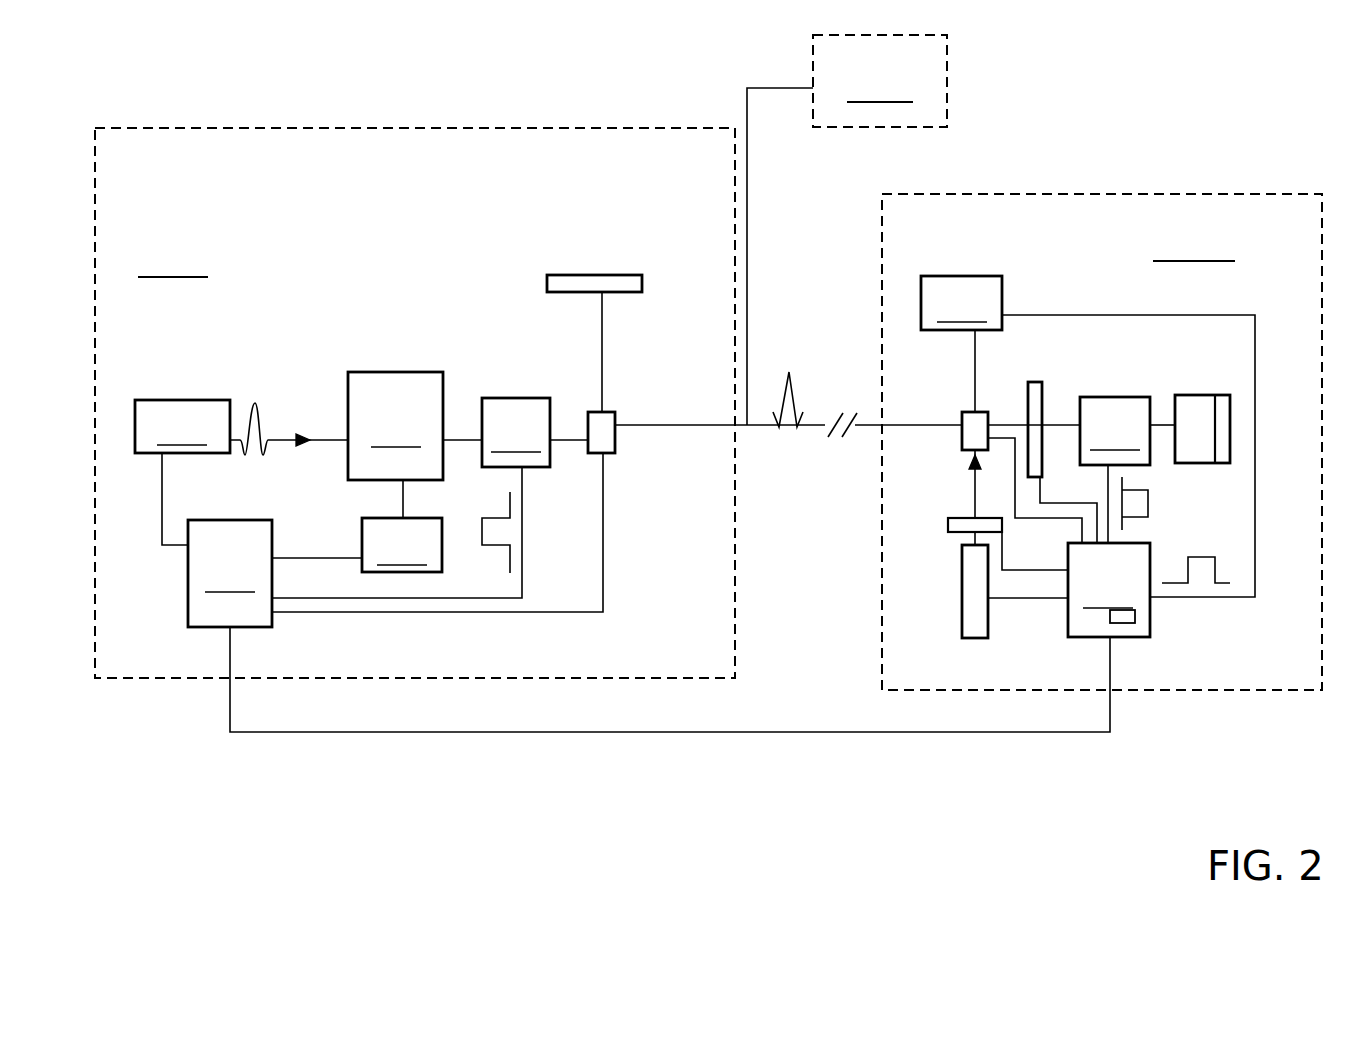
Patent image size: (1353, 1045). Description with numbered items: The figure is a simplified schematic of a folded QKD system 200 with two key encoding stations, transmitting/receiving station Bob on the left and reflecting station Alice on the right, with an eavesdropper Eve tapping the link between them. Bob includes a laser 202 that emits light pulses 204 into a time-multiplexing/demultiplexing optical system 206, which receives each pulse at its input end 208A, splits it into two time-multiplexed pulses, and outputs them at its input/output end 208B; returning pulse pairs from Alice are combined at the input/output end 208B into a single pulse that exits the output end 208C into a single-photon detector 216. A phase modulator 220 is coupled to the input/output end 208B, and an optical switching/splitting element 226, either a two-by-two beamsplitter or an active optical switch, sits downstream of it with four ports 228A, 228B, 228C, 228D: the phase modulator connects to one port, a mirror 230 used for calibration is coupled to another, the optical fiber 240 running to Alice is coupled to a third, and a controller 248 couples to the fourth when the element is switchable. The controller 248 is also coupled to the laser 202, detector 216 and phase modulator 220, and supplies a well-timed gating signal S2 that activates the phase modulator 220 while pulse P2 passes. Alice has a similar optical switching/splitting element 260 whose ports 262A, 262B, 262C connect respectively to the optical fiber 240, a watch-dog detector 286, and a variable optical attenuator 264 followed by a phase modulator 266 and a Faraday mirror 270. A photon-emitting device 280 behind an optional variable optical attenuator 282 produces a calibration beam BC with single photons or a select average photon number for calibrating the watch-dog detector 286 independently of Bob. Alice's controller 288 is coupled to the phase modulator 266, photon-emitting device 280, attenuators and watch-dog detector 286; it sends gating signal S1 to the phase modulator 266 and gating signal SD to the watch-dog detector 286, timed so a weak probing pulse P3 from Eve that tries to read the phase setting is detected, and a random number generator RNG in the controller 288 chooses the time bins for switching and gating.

The folded QKD system 200 is at (460, 71).
The laser 202 is at (182, 472).
The light pulses 204 is at (257, 405).
The time-multiplexing/demultiplexing optical system 206 is at (415, 445).
The input end 208A is at (347, 407).
The input/output end 208B is at (443, 383).
The output end 208C is at (375, 481).
The single-photon detector 216 is at (402, 545).
The phase modulator 220 is at (535, 432).
The optical switching/splitting element 226 is at (622, 405).
The port 228A is at (588, 424).
The port 228B is at (604, 411).
The port 228C is at (616, 450).
The port 228D is at (603, 454).
The mirror 230 is at (592, 275).
The optical fiber 240 is at (760, 427).
The controller 248 is at (649, 592).
The optical switching/splitting element 260 is at (952, 403).
The port 262A is at (960, 423).
The port 262B is at (977, 410).
The port 262C is at (990, 417).
The variable optical attenuator 264 is at (1027, 380).
The phase modulator 266 is at (1127, 470).
The Faraday mirror 270 is at (1175, 408).
The photon-emitting device 280 is at (977, 638).
The variable optical attenuator 282 is at (947, 522).
The watch-dog detector 286 is at (1088, 436).
The controller 288 is at (1109, 590).
The probe signal P3 is at (790, 383).
The gating signal S1 is at (1150, 503).
The gating signal S2 is at (508, 561).
The calibration beam BC is at (1040, 503).
The WDD gating signal SD is at (1232, 583).
The random number generator RNG is at (1123, 625).